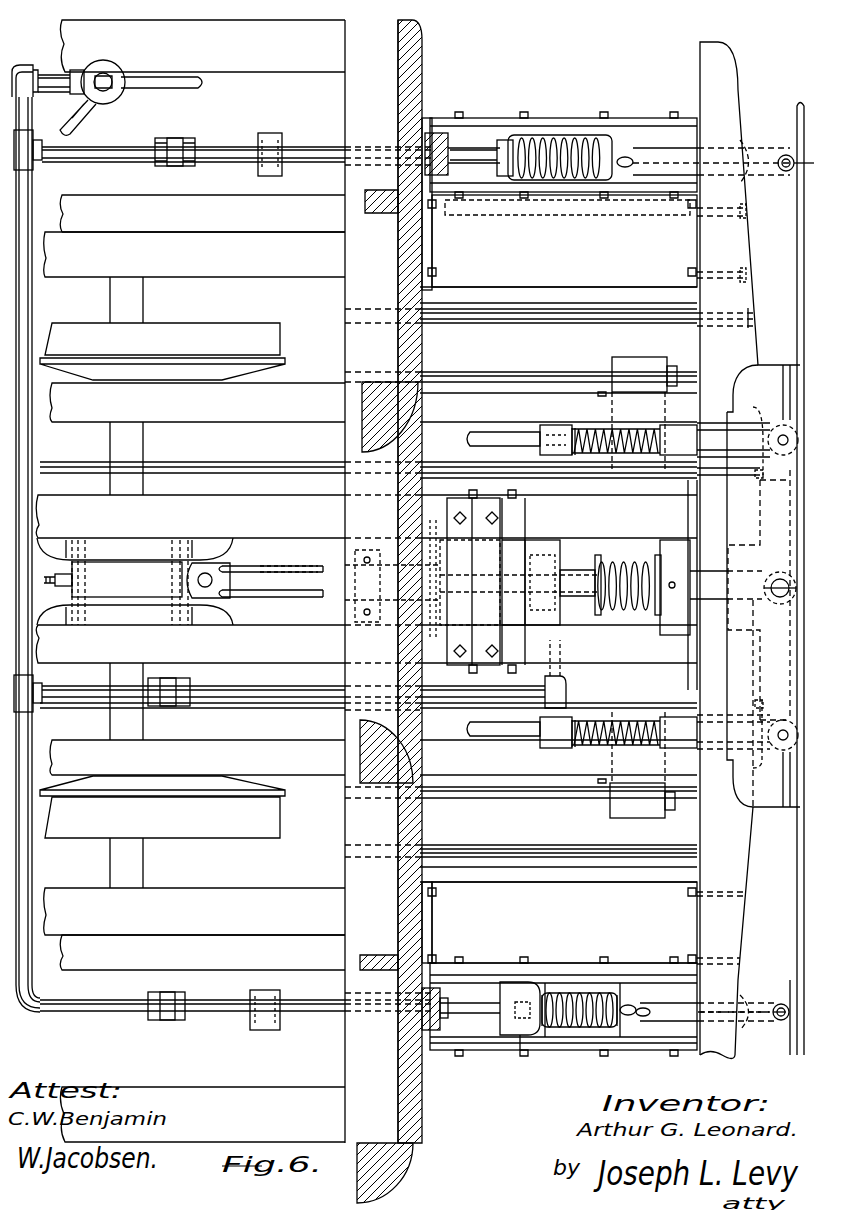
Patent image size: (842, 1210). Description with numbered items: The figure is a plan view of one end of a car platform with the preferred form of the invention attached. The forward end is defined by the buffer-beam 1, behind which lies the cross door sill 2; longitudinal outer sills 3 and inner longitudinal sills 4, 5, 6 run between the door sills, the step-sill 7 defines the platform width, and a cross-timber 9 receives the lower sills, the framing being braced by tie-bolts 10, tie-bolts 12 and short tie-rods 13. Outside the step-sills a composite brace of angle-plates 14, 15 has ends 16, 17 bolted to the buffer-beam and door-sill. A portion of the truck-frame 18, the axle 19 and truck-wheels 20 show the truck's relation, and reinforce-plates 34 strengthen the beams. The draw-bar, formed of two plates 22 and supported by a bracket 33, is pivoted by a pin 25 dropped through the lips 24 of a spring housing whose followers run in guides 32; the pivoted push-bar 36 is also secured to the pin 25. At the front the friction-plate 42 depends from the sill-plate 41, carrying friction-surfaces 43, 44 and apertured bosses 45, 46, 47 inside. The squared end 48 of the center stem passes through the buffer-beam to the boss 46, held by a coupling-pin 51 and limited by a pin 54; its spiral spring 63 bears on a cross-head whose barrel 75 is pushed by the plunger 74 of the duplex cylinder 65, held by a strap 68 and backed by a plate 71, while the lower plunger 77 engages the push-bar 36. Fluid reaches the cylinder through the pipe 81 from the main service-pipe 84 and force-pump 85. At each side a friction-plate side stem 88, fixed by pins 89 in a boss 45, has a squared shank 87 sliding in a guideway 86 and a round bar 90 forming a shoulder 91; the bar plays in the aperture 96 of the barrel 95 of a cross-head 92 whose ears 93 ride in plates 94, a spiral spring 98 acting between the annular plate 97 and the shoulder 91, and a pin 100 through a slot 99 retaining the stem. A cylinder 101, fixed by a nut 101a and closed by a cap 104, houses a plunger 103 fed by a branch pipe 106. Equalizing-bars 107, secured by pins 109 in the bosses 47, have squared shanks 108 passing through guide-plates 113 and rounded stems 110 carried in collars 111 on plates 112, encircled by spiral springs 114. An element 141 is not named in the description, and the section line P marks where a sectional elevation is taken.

The buffer-beam 1 is at (744, 550).
The cross door sill 2 is at (383, 611).
The longitudinal outer sills 3 is at (202, 581).
The inner longitudinal sill 4 is at (202, 582).
The inner longitudinal sill 5 is at (373, 579).
The central inner longitudinal sill 6 is at (342, 332).
The step-sill 7 is at (328, 850).
The cross-timber 9 is at (586, 484).
The tie-bolts 10 is at (506, 372).
The tie-bolts 12 is at (318, 720).
The short tie-rods 13 is at (462, 324).
The angle-plate 14 is at (636, 1057).
The angle-plate 15 is at (530, 985).
The end of angle-plate 16 is at (432, 242).
The end of angle-plate 17 is at (688, 244).
The truck-frame 18 is at (194, 583).
The axle 19 is at (134, 445).
The truck-wheels 20 is at (186, 335).
The draw-bar plates 22 is at (276, 555).
The forwardly-extending lips 24 is at (192, 612).
The pin 25 is at (198, 580).
The guides 32 is at (133, 548).
The bracket 33 is at (113, 579).
The reinforce-plates 34 is at (293, 543).
The pivoted push-bar 36 is at (310, 598).
The sill-plate 41 is at (759, 595).
The friction-plate 42 is at (775, 310).
The friction-surface 43 is at (804, 1016).
The friction-surface 44 is at (790, 824).
The apertured bosses 45 is at (785, 154).
The apertured boss 46 is at (780, 598).
The apertured boss 47 is at (780, 448).
The squared end of side stem 48 is at (680, 578).
The coupling-pin 51 is at (790, 587).
The pin 54 is at (672, 590).
The spiral spring 63 is at (648, 560).
The duplex cylinder 65 is at (516, 552).
The strap or cross-bar 68 is at (458, 505).
The plate 71 is at (420, 518).
The ram or plunger 74 is at (520, 592).
The barrel 75 is at (548, 545).
The ram or plunger 77 is at (438, 630).
The pipe 81 is at (26, 582).
The main service-pipe 84 is at (32, 122).
The force-pump 85 is at (110, 72).
The guideways 86 is at (742, 148).
The squared shanks 87 is at (758, 1018).
The friction-plate side stems 88 is at (665, 593).
The pins 89 is at (773, 1012).
The round bar 90 is at (578, 1043).
The shoulder 91 is at (618, 1043).
The cross-head 92 is at (536, 1028).
The ears 93 is at (604, 135).
The bars or plates 94 is at (640, 135).
The barrel 95 is at (508, 1035).
The aperture 96 is at (526, 1035).
The annular plate 97 is at (548, 993).
The spiral spring 98 is at (626, 993).
The slot 99 is at (634, 160).
The pin 100 is at (650, 1012).
The cylinder 101 is at (302, 1027).
The nut 101a is at (440, 133).
The ram or plunger 103 is at (476, 1008).
The cap 104 is at (262, 1032).
The branch pipe 106 is at (228, 146).
The equalizing-bars 107 is at (595, 587).
The squared shank 108 is at (683, 447).
The pins 109 is at (790, 440).
The rounded stems 110 is at (516, 445).
The collar 111 is at (556, 586).
The plate 112 is at (576, 428).
The guide-plates 113 is at (706, 422).
The spiral springs 114 is at (628, 428).
The bracket 141 is at (782, 393).
The section line P is at (807, 164).